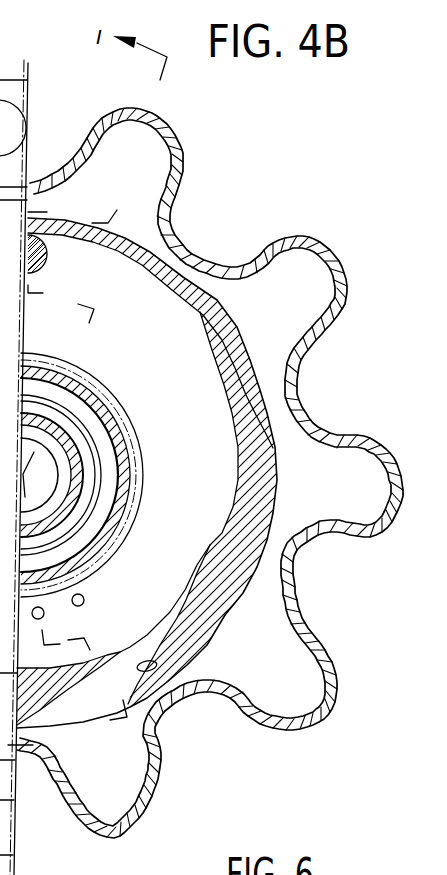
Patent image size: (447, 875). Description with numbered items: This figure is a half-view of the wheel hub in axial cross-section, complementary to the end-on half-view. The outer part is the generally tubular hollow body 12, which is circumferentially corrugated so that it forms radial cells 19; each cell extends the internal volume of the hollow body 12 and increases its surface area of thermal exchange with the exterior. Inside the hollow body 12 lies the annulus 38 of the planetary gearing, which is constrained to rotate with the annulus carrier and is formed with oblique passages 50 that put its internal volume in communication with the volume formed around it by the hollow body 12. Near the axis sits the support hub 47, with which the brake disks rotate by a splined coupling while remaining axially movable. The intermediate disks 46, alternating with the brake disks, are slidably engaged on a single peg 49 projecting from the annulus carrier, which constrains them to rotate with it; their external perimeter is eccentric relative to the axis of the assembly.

The hollow body 12 is at (333, 240).
The radial cells 19 is at (153, 155).
The annulus 38 is at (217, 290).
The intermediate disks 46 is at (203, 444).
The support hub 47 is at (118, 537).
The peg 49 is at (43, 257).
The oblique passages 50 is at (157, 665).